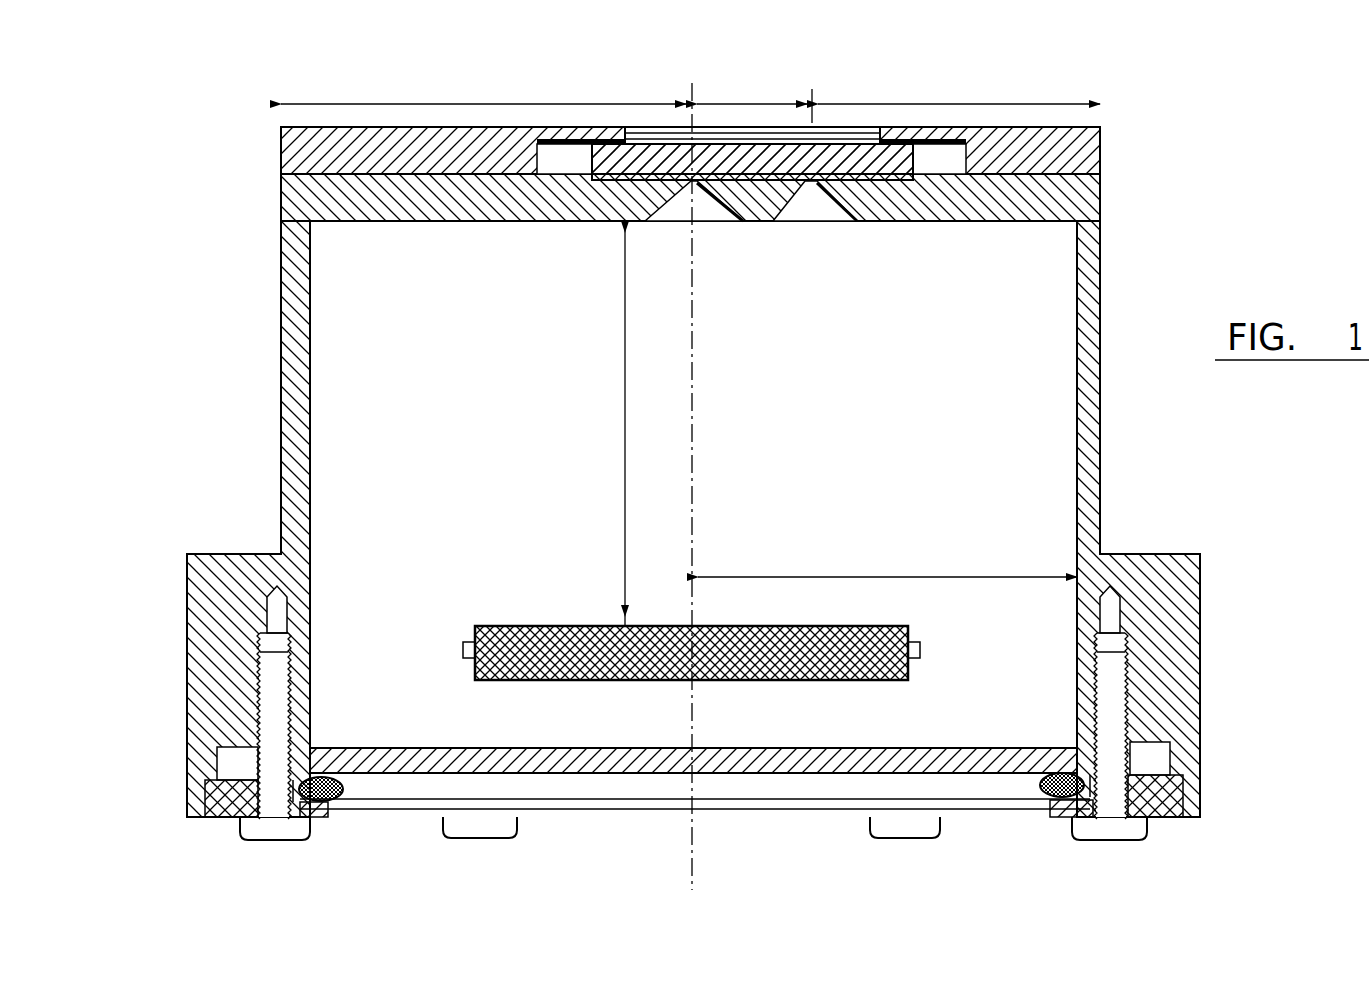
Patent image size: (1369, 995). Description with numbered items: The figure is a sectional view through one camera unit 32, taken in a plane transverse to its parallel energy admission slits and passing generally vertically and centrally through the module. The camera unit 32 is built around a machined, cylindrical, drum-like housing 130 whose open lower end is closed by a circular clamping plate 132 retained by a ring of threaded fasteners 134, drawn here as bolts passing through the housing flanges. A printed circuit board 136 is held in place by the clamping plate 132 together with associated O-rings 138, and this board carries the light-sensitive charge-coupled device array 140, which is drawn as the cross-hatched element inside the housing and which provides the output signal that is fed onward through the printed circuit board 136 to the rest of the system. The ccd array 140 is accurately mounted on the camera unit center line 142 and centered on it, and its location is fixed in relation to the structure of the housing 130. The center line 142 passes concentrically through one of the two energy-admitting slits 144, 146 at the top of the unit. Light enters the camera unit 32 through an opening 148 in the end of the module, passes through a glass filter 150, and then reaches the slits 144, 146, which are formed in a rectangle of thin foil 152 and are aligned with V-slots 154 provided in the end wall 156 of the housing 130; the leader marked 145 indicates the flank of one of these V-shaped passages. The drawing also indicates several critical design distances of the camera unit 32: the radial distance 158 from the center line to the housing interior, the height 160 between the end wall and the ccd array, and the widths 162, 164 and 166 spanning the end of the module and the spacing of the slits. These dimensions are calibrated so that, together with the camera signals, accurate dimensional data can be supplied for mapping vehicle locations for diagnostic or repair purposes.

The camera unit 32 is at (1124, 260).
The housing 130 is at (309, 390).
The clamping plate 132 is at (402, 809).
The threaded fasteners 134 is at (275, 705).
The printed circuit board 136 is at (735, 762).
The O-rings 138 is at (346, 803).
The charge-coupled device array 140 is at (497, 626).
The camera unit center line 142 is at (693, 413).
The energy-admitting slit 144 is at (698, 186).
The passage wall 145 is at (657, 208).
The energy-admitting slit 146 is at (817, 186).
The opening 148 is at (630, 160).
The glass filter 150 is at (867, 157).
The thin foil 152 is at (617, 183).
The V-slots 154 is at (797, 205).
The end wall 156 is at (418, 205).
The critical design distance 158 is at (885, 577).
The critical design distance 160 is at (625, 420).
The critical design distance 162 is at (480, 104).
The critical design distance 164 is at (753, 104).
The critical design distance 166 is at (961, 104).